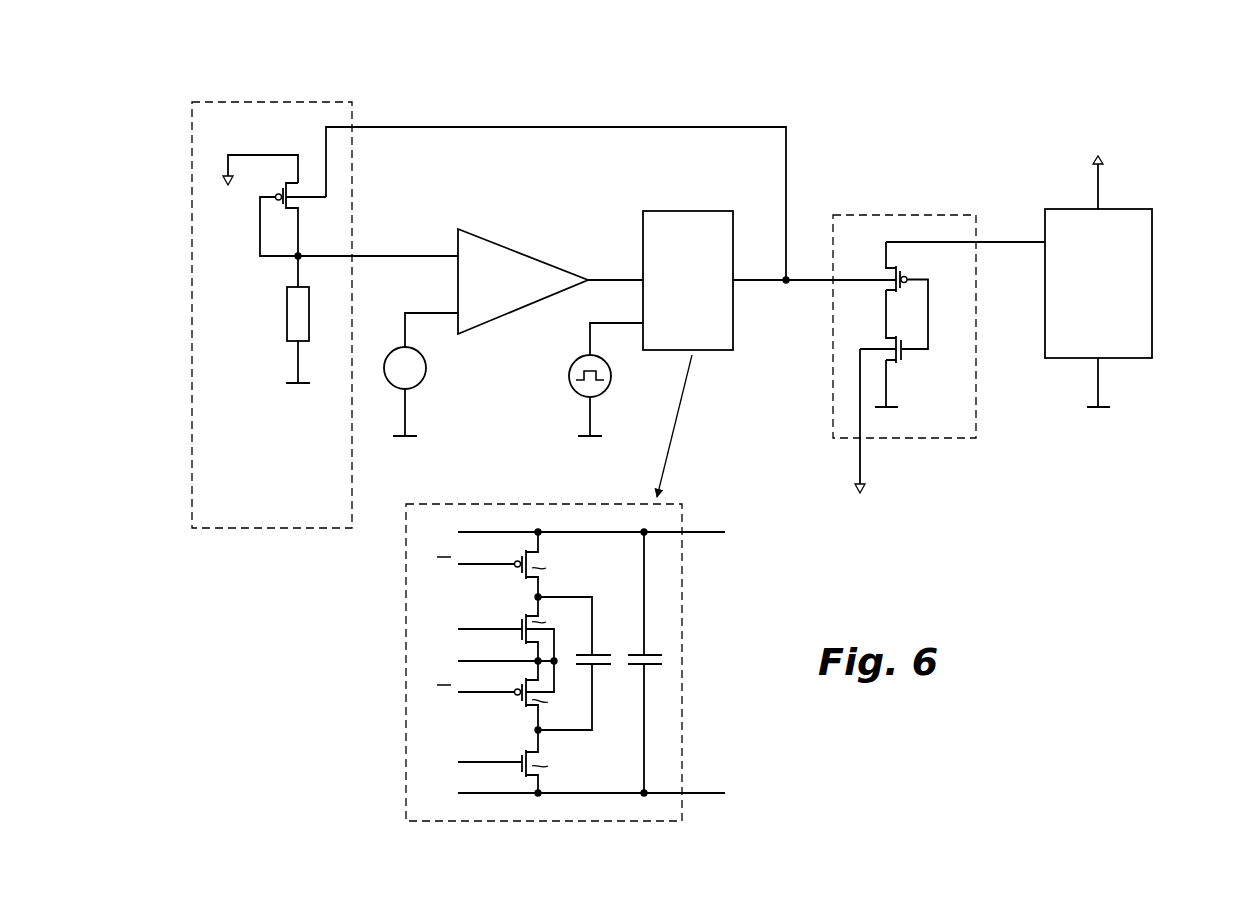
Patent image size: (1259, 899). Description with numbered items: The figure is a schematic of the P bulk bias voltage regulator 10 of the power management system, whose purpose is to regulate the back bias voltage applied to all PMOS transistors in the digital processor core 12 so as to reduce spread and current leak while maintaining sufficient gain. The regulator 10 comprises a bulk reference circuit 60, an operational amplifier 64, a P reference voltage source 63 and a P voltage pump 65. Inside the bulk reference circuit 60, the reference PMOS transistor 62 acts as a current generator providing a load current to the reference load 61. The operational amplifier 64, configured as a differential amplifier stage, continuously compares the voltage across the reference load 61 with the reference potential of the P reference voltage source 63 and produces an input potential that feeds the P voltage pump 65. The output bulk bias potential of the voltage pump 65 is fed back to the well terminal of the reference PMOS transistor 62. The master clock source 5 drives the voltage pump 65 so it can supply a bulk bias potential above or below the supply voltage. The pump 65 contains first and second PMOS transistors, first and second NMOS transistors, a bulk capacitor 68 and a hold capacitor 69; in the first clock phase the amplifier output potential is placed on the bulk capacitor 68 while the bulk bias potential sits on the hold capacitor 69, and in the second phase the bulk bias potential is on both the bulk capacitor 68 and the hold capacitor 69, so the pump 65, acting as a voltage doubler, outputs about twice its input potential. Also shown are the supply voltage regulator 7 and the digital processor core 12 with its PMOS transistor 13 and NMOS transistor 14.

The P bulk bias voltage regulator 10 is at (722, 86).
The bulk reference circuit 60 is at (278, 529).
The reference load 61 is at (287, 330).
The reference PMOS transistor 62 is at (296, 206).
The P reference voltage source 63 is at (383, 368).
The operational amplifier 64 is at (512, 246).
The P voltage pump 65 is at (688, 210).
The master clock source 5 is at (612, 382).
The bulk capacitor 68 is at (600, 652).
The hold capacitor 69 is at (652, 652).
The digital processor core 12 is at (938, 440).
The PMOS transistor 13 is at (905, 266).
The NMOS transistor 14 is at (905, 355).
The supply voltage regulator 7 is at (1152, 255).